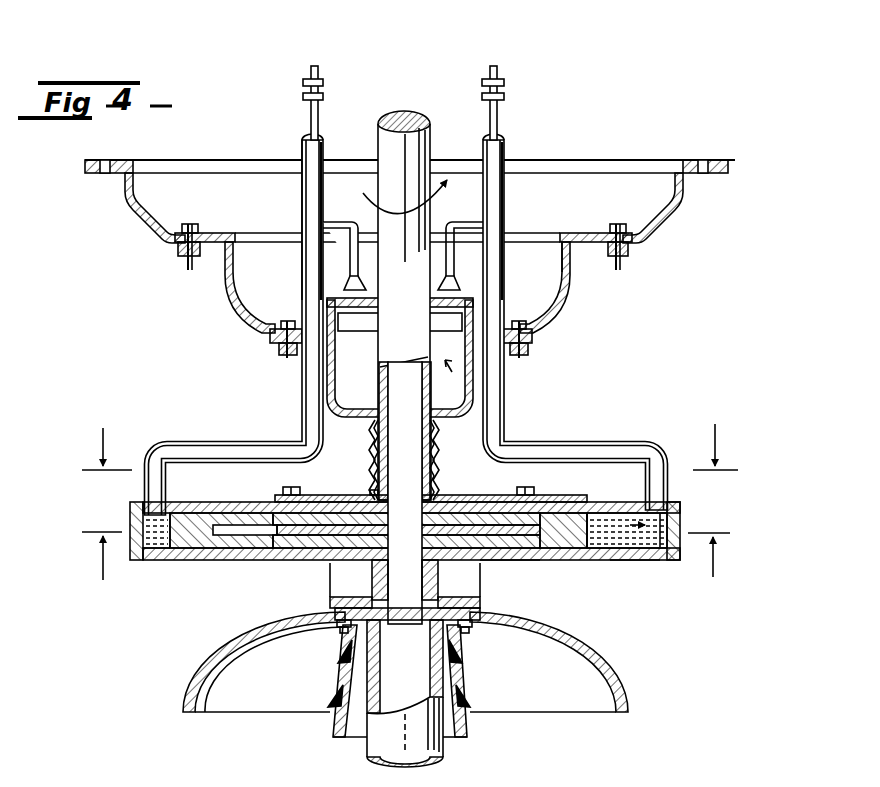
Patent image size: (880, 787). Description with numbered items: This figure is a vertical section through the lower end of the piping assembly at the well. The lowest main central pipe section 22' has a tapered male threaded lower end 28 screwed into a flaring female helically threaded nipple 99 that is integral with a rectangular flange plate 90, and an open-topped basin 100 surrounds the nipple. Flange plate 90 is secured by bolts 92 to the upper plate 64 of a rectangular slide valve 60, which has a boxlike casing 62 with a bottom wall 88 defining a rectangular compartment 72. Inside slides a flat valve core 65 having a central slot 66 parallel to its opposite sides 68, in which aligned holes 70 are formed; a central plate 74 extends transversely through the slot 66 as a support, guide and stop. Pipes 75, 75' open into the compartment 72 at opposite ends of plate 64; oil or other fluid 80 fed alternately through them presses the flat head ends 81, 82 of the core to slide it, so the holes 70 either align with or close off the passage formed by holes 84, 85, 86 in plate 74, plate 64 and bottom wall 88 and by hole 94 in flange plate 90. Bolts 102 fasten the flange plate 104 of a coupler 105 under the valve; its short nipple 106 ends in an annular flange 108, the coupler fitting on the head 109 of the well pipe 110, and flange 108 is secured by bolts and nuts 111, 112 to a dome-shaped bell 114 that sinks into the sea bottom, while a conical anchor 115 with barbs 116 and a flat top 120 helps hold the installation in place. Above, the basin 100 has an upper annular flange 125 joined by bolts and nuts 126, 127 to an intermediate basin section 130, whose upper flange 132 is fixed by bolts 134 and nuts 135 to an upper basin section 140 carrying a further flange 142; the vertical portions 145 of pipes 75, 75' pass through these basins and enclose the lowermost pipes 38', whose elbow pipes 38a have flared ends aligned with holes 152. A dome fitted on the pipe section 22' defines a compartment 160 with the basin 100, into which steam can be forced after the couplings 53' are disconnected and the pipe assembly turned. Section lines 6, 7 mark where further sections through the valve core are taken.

The section line 6- 6 is at (410, 436).
The section line 7- 7 is at (406, 569).
The lowermost main central pipe section 22' is at (400, 292).
The lower end of pipe section 28 is at (398, 400).
The lowermost inner pipe 38' is at (275, 103).
The elbow pipe 38a is at (340, 222).
The coupling 53' is at (287, 84).
The rectangular slide valve 60 is at (555, 572).
The boxlike casing 62 is at (660, 531).
The upper plate 64 is at (600, 502).
The valve core 65 is at (220, 550).
The central slot 66 is at (245, 538).
The sides of valve core 68 is at (258, 555).
The aligned holes 70 is at (368, 578).
The rectangular compartment 72 is at (612, 552).
The central plate 74 is at (520, 490).
The pipe 75 is at (596, 288).
The pipe 75' is at (210, 324).
The oil or other fluid 80 is at (675, 566).
The flat head end of valve core 81 is at (178, 550).
The flat head end of valve core 82 is at (560, 512).
The hole in central plate 84 is at (424, 506).
The hole in top plate 85 is at (434, 492).
The hole in bottom wall 86 is at (440, 582).
The bottom wall 88 is at (638, 561).
The rectangular flange plate 90 is at (275, 498).
The bolts 92 is at (292, 487).
The hole in flange plate 94 is at (374, 494).
The female helically threaded nipple 99 is at (372, 468).
The basin 100 is at (335, 376).
The bolts 102 is at (283, 560).
The flange plate of coupler 104 is at (503, 565).
The coupler 105 is at (360, 580).
The short nipple 106 is at (470, 590).
The annular flange 108 is at (496, 620).
The well head 109 is at (300, 624).
The well pipe 110 is at (382, 750).
The bolts 111 is at (472, 636).
The nuts 112 is at (343, 632).
The dome-shaped bell 114 is at (575, 686).
The conical anchor 115 is at (322, 714).
The barbs 116 is at (470, 702).
The flat top of anchor 120 is at (470, 660).
The upper annular flange of basin 125 is at (535, 338).
The bolts 126 is at (262, 332).
The nuts 127 is at (280, 344).
The intermediate basin section 130 is at (230, 290).
The annular flange 132 is at (583, 262).
The bolts 134 is at (612, 228).
The nuts 135 is at (620, 254).
The upper basin section 140 is at (680, 205).
The flange 142 is at (722, 164).
The vertical pipe portions 145 is at (300, 183).
The holes 152 is at (358, 314).
The compartment 160 is at (470, 380).